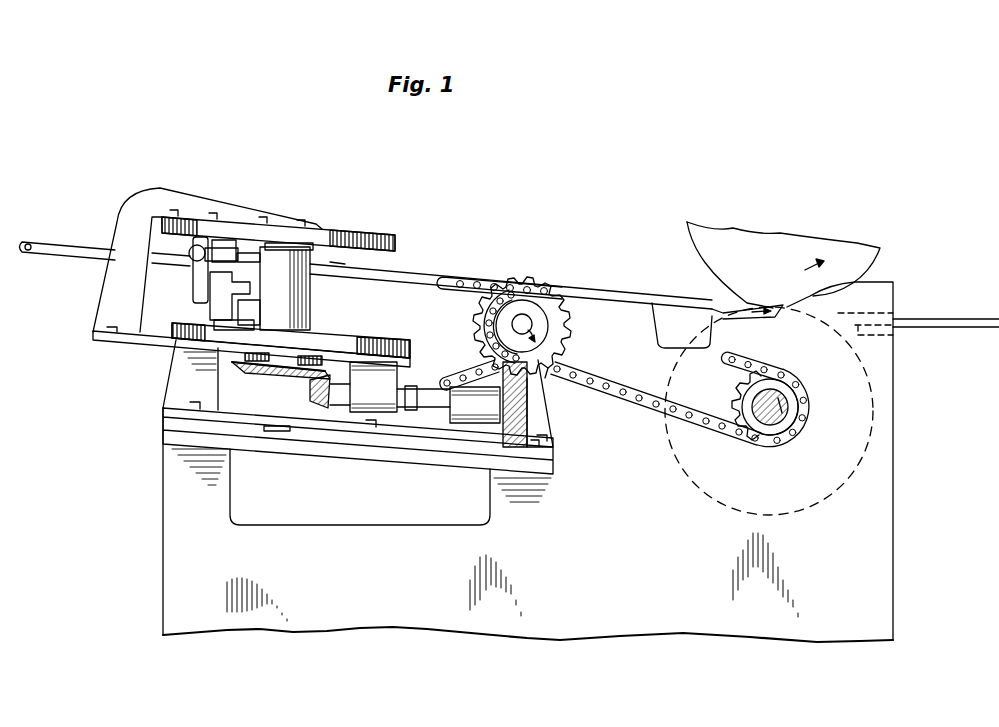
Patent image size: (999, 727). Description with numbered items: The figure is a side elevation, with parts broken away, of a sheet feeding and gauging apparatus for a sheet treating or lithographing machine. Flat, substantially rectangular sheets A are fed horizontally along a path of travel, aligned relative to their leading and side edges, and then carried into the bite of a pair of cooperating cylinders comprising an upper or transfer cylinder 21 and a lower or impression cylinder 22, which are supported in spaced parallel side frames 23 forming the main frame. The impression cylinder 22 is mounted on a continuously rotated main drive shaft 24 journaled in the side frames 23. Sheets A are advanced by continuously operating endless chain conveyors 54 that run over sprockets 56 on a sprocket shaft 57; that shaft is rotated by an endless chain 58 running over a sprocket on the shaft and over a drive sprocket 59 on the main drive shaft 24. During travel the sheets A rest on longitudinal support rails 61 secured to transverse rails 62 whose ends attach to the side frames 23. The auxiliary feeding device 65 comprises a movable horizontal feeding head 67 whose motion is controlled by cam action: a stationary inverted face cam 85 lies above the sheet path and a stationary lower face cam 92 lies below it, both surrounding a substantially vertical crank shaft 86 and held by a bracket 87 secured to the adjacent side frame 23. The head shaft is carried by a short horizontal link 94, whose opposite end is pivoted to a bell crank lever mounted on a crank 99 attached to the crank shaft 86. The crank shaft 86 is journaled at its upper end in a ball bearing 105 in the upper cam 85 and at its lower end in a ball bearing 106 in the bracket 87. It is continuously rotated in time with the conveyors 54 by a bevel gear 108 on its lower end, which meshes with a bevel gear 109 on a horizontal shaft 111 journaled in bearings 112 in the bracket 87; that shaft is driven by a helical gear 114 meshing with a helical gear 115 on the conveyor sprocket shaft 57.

The upper or transfer cylinder 21 is at (764, 243).
The lower or impression cylinder 22 is at (818, 498).
The side frames 23 is at (799, 626).
The main drive shaft 24 is at (784, 401).
The endless chain conveyors 54 is at (460, 276).
The sprockets 56 is at (520, 316).
The sprocket shaft 57 is at (548, 293).
The endless chain 58 is at (628, 403).
The drive sprocket 59 is at (740, 397).
The support rails 61 is at (78, 246).
The transverse rails 62 is at (698, 308).
The auxiliary feeding device 65 is at (243, 195).
The feeding head 67 is at (200, 285).
The inverted face cam 85 is at (362, 246).
The crank shaft 86 is at (288, 243).
The bracket 87 is at (174, 339).
The lower face cam 92 is at (368, 348).
The link 94 is at (220, 310).
The crank 99 is at (296, 303).
The ball bearing 105 is at (332, 251).
The ball bearing 106 is at (318, 358).
The bevel gear 108 is at (250, 372).
The bevel gear 109 is at (317, 396).
The horizontal shaft 111 is at (410, 402).
The bearings 112 is at (367, 398).
The helical gear 114 is at (528, 424).
The helical gear 115 is at (569, 327).
The sheets A is at (613, 288).